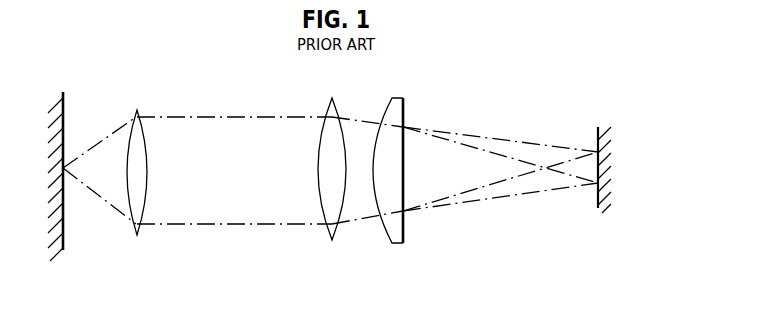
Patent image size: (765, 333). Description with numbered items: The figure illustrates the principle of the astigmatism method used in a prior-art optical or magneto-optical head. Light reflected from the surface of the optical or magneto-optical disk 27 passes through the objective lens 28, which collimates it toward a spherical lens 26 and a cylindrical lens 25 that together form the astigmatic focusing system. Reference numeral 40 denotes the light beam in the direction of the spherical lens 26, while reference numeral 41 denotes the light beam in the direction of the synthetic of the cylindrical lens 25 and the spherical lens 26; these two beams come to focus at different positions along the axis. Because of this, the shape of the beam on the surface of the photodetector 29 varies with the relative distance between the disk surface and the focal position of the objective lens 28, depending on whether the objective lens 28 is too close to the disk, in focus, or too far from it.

The cylindrical lens 25 is at (398, 113).
The spherical lens 26 is at (327, 107).
The optical or magneto-optical disk 27 is at (59, 97).
The objective lens 28 is at (139, 126).
The photodetector 29 is at (605, 129).
The light beam in the direction of the spherical lens 40 is at (488, 138).
The light beam in the direction of the synthetic of the cylindrical lens and the sph 41 is at (497, 188).